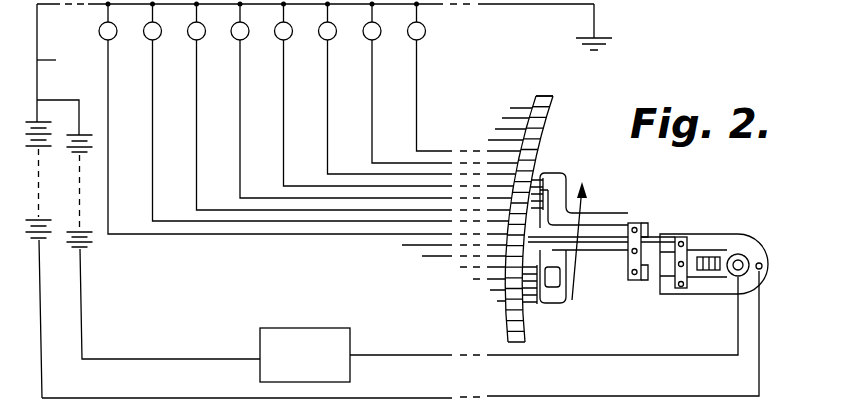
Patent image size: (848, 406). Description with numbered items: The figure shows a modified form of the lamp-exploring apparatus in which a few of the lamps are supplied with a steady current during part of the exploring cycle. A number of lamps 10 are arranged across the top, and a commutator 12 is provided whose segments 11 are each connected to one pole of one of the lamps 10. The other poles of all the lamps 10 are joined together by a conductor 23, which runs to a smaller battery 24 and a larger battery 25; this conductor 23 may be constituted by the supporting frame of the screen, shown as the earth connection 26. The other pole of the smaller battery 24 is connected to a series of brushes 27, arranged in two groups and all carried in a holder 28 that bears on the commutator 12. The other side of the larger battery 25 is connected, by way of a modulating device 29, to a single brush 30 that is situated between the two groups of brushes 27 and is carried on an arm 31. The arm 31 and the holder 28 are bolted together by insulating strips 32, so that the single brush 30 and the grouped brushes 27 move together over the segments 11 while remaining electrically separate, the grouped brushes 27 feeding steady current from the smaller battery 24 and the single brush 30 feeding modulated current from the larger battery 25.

The lamps 10 is at (435, 48).
The segments 11 is at (540, 123).
The commutator 12 is at (545, 95).
The conductor 23 is at (64, 74).
The smaller battery 24 is at (40, 238).
The larger battery 25 is at (86, 244).
The supporting frame of the screen 26 is at (600, 45).
The brushes 27 is at (548, 325).
The holder 28 is at (728, 245).
The modulating device 29 is at (312, 350).
The single brush 30 is at (527, 243).
The arm 31 is at (670, 256).
The insulating strips 32 is at (635, 227).